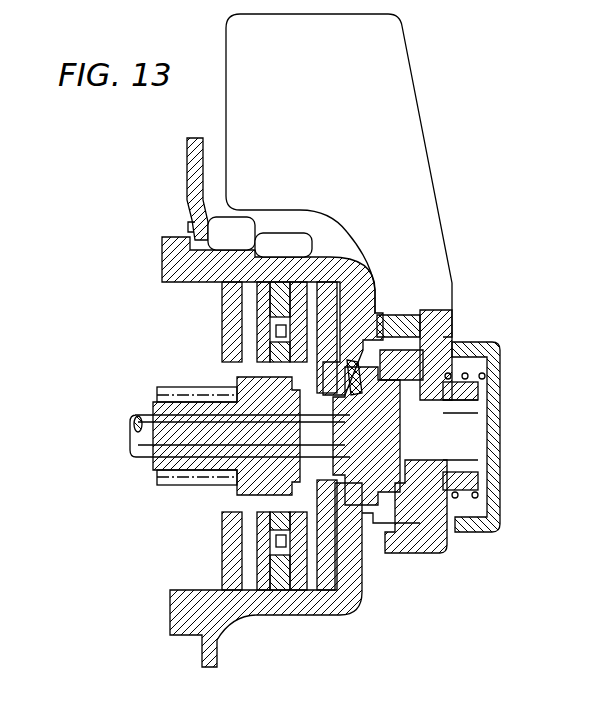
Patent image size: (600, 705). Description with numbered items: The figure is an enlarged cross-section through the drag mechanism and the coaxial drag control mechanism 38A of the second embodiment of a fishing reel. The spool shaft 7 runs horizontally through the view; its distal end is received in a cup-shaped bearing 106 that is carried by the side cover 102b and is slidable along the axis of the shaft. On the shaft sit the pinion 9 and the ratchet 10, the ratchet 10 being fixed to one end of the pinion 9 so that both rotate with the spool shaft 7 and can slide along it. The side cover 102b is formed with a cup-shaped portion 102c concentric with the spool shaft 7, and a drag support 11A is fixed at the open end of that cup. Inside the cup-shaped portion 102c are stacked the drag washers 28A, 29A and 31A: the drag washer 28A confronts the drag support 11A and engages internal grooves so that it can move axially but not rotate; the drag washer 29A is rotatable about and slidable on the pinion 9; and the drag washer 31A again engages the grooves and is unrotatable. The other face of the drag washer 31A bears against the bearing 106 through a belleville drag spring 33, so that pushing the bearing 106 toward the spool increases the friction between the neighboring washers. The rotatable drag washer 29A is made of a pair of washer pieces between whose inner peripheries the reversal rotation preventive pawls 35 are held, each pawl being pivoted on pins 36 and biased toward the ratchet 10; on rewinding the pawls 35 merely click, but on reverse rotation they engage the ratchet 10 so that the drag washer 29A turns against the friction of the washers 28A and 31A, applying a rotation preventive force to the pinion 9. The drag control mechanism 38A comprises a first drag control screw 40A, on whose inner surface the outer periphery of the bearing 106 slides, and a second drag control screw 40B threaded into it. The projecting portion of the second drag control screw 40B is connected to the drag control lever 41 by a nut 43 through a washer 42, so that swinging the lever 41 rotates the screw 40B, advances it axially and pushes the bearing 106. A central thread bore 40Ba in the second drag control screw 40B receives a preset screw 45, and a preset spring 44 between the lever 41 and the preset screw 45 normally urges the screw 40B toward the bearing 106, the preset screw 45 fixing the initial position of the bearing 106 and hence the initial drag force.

The drag control lever 41 is at (398, 82).
The side cover 102b is at (190, 157).
The cup-shaped portion 102c is at (283, 287).
The drag washer 31A is at (355, 587).
The drag support 11A is at (235, 562).
The reversal rotation preventive pawls 35 is at (282, 317).
The pins 36 is at (280, 342).
The pinion 9 is at (168, 392).
The ratchet 10 is at (233, 382).
The spool shaft 7 is at (150, 435).
The cup-shaped bearing 106 is at (390, 430).
The drag spring 33 is at (353, 353).
The second drag control screw 40B is at (412, 393).
The first drag control screw 40A is at (412, 528).
The central thread bore 40Ba is at (460, 452).
The washer 42 is at (453, 375).
The preset spring 44 is at (470, 372).
The nut 43 is at (470, 385).
The preset screw 45 is at (492, 400).
The drag control mechanism 38A is at (502, 410).
The drag washer 28A is at (248, 577).
The drag washer 29A is at (263, 573).